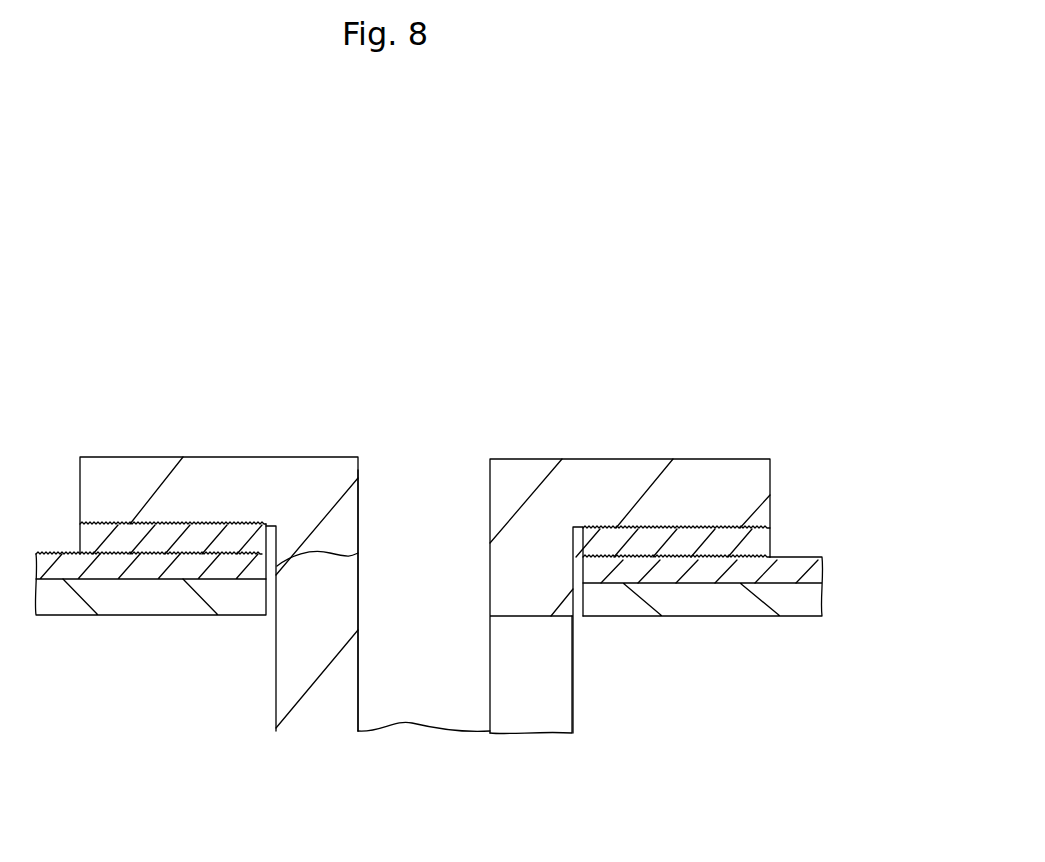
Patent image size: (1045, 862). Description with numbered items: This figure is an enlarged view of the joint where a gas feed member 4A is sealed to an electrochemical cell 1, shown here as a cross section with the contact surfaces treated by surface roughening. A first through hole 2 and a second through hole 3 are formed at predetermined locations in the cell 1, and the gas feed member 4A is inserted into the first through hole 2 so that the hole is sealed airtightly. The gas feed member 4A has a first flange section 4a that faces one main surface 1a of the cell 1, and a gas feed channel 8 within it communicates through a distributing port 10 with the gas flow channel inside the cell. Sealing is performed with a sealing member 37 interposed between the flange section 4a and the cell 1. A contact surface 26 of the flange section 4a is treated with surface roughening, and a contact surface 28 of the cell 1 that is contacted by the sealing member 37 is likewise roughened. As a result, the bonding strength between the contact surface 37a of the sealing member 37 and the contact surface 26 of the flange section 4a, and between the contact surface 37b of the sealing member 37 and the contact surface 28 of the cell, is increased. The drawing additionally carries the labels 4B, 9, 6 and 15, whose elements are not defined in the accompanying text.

The electrochemical cell 1 is at (723, 540).
The one main surface 1a is at (783, 559).
The first through hole 2 is at (358, 559).
The second through hole 3 is at (358, 553).
The gas feed member 4A is at (268, 550).
The holding block 4B is at (268, 562).
The first flange section 4a is at (167, 469).
The base plate 6 is at (203, 608).
The gas feed channel 8 is at (407, 562).
The side wall 9 is at (362, 488).
The distributing port 10 is at (527, 618).
The intermediate layer 15 is at (138, 571).
The contact surface of the flange section 26 is at (227, 542).
The contact surface of the cell 28 is at (613, 555).
The sealing member 37 is at (179, 536).
The contact surface of the sealing member 37a is at (100, 523).
The contact surface of the sealing member 37b is at (97, 553).